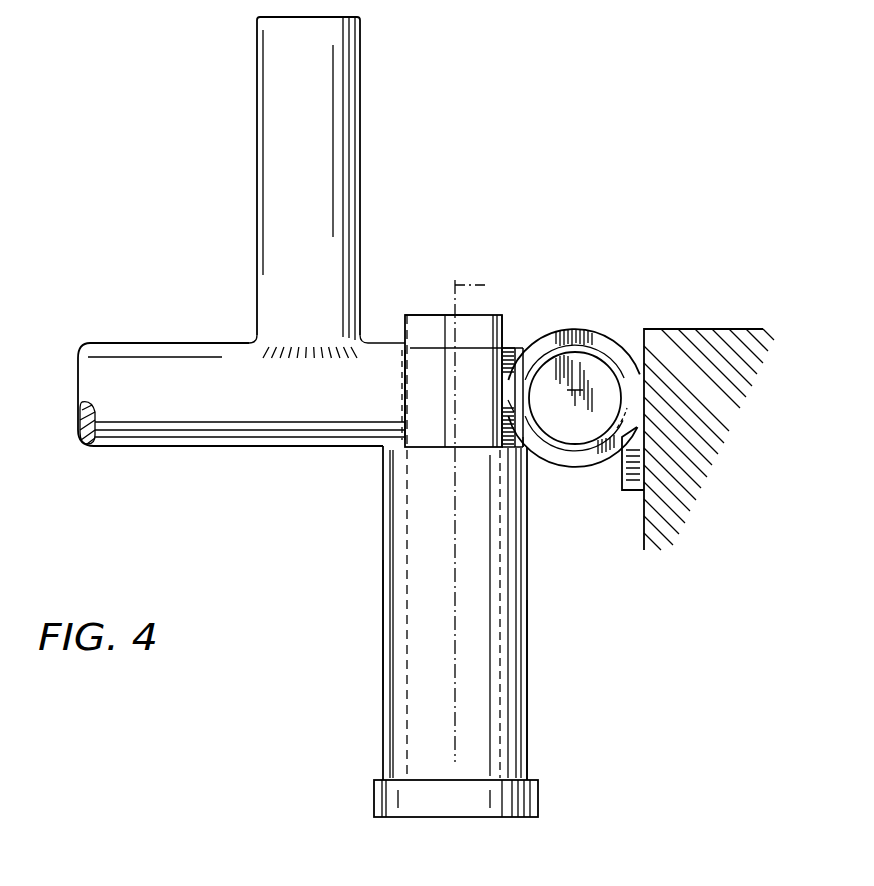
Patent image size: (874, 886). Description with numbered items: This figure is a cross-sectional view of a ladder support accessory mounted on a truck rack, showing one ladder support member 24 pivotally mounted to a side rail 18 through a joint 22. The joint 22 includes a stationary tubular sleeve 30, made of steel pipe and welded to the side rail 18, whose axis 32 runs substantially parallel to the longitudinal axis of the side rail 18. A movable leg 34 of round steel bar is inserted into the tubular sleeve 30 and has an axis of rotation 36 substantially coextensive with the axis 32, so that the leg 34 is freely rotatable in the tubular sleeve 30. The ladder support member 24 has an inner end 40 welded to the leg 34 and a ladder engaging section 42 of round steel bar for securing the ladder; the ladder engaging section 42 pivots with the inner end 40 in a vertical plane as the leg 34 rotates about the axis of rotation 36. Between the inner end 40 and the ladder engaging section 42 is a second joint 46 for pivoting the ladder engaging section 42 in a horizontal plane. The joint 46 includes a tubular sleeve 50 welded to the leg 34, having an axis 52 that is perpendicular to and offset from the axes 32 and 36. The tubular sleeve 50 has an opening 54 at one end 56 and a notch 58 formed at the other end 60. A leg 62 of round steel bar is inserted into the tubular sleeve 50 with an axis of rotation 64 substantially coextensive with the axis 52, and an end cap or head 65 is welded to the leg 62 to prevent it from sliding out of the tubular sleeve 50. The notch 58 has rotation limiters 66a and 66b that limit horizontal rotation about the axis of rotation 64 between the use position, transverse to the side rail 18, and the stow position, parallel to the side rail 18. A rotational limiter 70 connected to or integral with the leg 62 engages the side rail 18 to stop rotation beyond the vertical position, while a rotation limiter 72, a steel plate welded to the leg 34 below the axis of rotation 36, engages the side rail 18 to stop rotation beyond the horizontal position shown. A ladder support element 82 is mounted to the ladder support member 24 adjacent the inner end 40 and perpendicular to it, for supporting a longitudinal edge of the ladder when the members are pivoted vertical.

The side rail 18 is at (718, 340).
The joint 22 is at (588, 305).
The ladder support member 24 is at (208, 480).
The tubular sleeve 30 is at (566, 468).
The axis 32 is at (606, 364).
The leg 34 is at (583, 343).
The axis of rotation 36 is at (575, 398).
The inner end 40 is at (523, 345).
The ladder engaging section 42 is at (148, 352).
The joint 46 is at (366, 502).
The tubular sleeve 50 is at (378, 646).
The axis 52 is at (455, 690).
The opening 54 is at (406, 778).
The end 56 is at (528, 760).
The notch 58 is at (436, 447).
The other end 60 is at (438, 340).
The leg 62 is at (510, 318).
The axis of rotation 64 is at (472, 292).
The end cap or head 65 is at (540, 797).
The rotation limiter 66a is at (404, 394).
The rotation limiter 66b is at (507, 405).
The rotational limiter 70 is at (443, 315).
The rotation limiter 72 is at (628, 488).
The ladder support element 82 is at (362, 153).